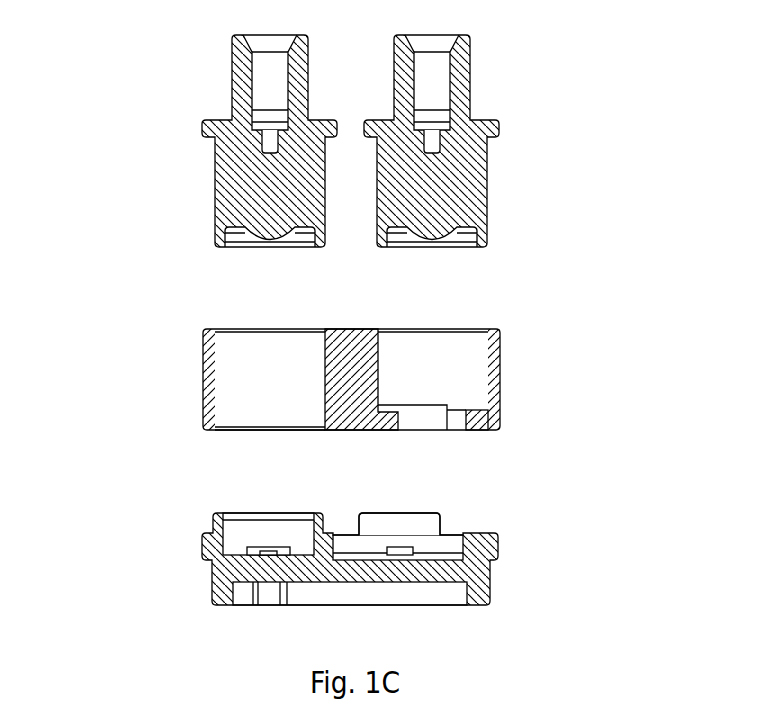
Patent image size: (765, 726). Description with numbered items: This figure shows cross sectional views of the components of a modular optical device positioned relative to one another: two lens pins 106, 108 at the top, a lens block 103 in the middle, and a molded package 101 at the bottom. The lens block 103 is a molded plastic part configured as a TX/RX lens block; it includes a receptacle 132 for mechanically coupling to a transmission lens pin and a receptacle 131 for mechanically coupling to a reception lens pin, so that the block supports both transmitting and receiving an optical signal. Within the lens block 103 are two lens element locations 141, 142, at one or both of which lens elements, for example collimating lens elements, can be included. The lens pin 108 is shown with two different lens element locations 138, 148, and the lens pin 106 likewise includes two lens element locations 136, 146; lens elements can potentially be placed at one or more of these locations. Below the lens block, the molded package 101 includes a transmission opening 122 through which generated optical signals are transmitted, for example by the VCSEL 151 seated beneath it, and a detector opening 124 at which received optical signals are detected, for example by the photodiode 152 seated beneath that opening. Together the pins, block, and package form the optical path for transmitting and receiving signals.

The molded package 101 is at (346, 575).
The lens block 103 is at (353, 399).
The lens pin 106 is at (512, 161).
The lens pin 108 is at (192, 161).
The transmission opening 122 is at (270, 527).
The detector opening 124 is at (397, 533).
The receptacle 131 is at (437, 370).
The receptacle 132 is at (268, 370).
The lens element location 136 is at (434, 153).
The lens element location 138 is at (268, 153).
The lens element location 141 is at (518, 448).
The lens element location 142 is at (260, 430).
The lens element location 146 is at (523, 250).
The lens element location 148 is at (181, 250).
The VCSEL 151 is at (250, 555).
The photodiode 152 is at (420, 553).